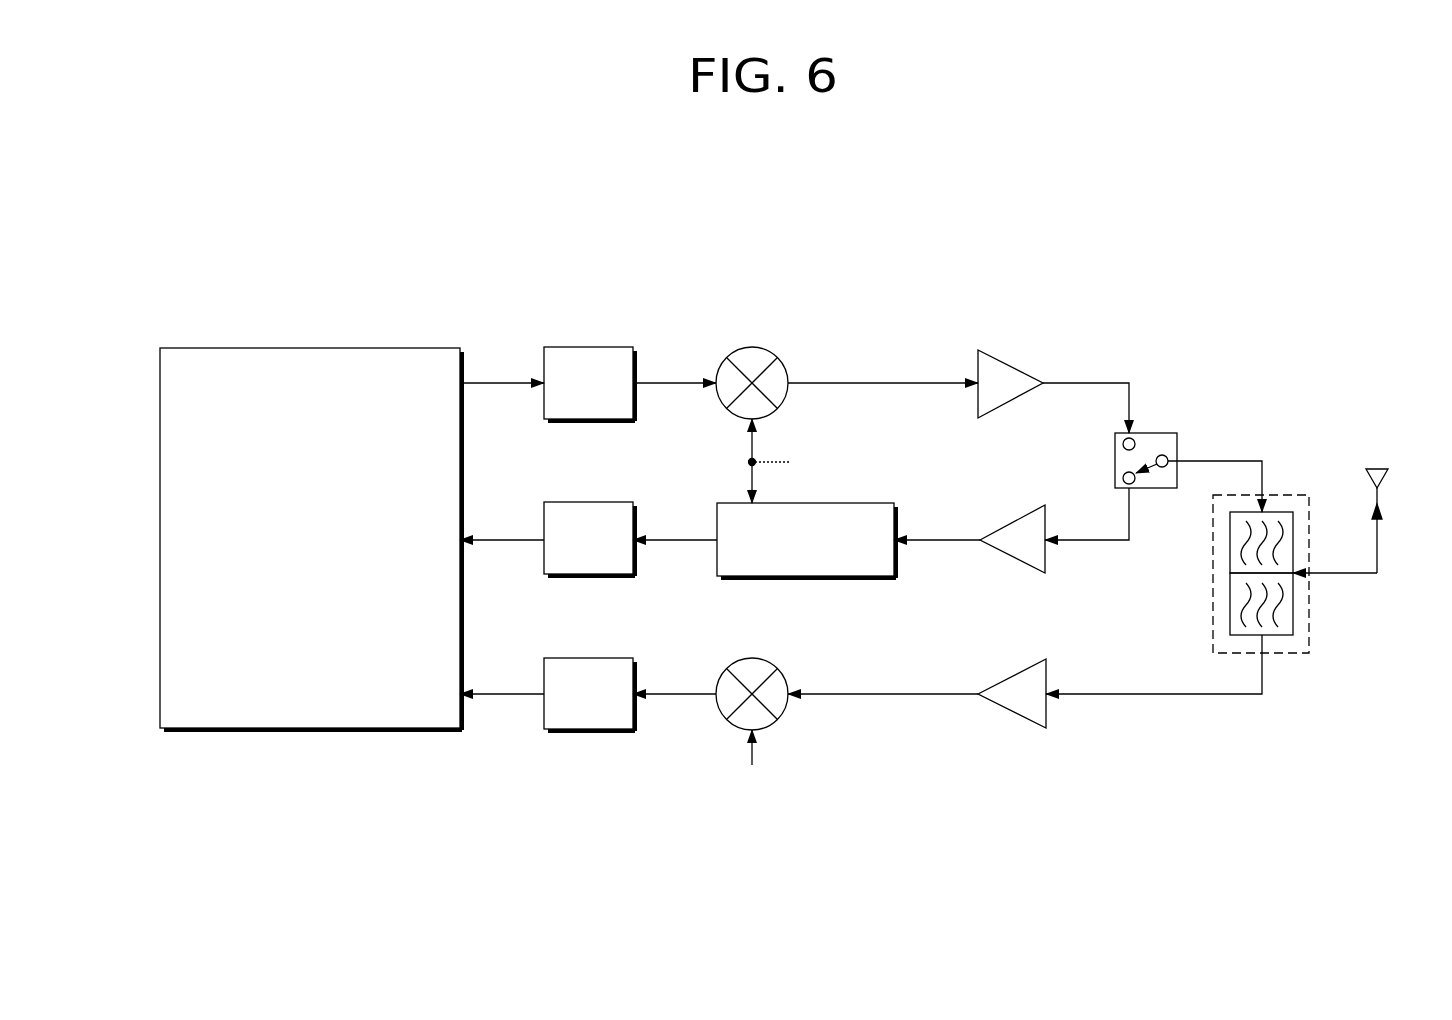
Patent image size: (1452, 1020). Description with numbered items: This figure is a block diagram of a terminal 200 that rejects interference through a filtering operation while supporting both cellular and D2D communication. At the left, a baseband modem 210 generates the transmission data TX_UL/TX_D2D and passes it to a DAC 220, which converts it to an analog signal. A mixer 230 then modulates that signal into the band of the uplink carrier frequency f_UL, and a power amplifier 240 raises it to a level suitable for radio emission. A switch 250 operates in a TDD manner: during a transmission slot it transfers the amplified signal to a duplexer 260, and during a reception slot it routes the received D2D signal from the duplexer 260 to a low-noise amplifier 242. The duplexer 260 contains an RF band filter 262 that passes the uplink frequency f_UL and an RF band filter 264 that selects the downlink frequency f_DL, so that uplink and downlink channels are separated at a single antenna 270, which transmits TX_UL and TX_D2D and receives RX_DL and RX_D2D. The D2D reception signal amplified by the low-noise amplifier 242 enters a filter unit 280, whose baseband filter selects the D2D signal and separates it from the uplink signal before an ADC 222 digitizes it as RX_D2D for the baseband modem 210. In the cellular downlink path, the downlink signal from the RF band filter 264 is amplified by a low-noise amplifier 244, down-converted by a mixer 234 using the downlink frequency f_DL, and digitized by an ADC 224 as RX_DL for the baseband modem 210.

The terminal 200 is at (1265, 265).
The baseband modem 210 is at (401, 348).
The DAC 220 is at (585, 347).
The ADC 222 is at (585, 502).
The ADC 224 is at (585, 658).
The mixer 230 is at (757, 348).
The mixer 234 is at (779, 668).
The power amplifier 240 is at (1012, 362).
The low-noise amplifier 242 is at (1013, 523).
The low-noise amplifier 244 is at (1013, 678).
The switch 250 is at (1155, 433).
The duplexer 260 is at (1237, 541).
The RF band filter 262 is at (1230, 541).
The RF band filter 264 is at (1230, 603).
The antenna 270 is at (1380, 469).
The filter unit 280 is at (852, 503).